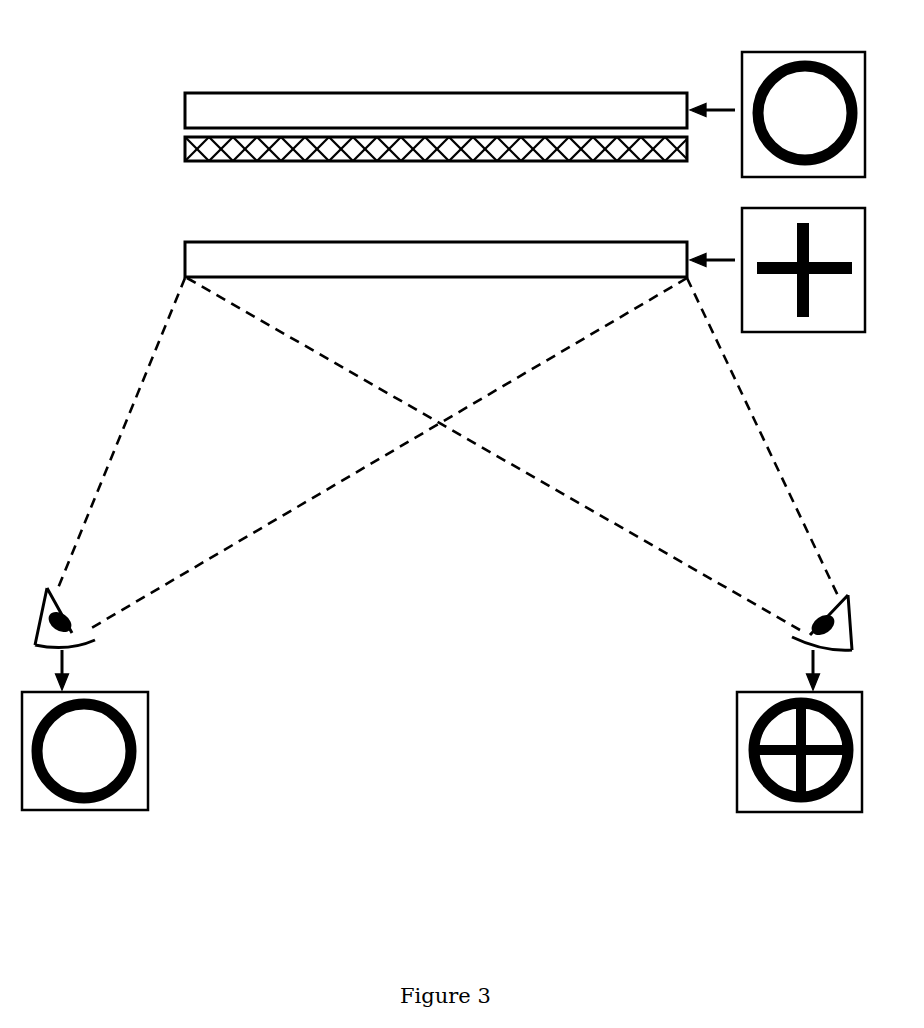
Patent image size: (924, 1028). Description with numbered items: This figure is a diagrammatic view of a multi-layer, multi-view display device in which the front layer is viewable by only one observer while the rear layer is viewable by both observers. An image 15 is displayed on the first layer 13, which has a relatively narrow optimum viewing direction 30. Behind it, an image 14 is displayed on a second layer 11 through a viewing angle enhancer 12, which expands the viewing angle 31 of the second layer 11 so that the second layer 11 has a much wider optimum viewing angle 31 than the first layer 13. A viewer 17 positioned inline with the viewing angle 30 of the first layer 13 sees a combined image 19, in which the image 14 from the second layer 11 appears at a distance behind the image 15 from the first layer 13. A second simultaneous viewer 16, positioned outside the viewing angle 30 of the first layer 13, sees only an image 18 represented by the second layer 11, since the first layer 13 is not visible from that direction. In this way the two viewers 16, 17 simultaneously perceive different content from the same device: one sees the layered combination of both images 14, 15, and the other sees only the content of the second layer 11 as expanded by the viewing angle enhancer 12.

The second layer 11 is at (185, 103).
The viewing angle enhancer 12 is at (185, 155).
The first layer 13 is at (185, 260).
The image 14 is at (735, 82).
The image 15 is at (733, 233).
The second simultaneous viewer 16 is at (100, 641).
The viewer 17 is at (780, 638).
The image 18 is at (153, 748).
The combined image 19 is at (737, 746).
The optimum viewing direction 30 is at (494, 302).
The viewing angle 31 is at (217, 183).